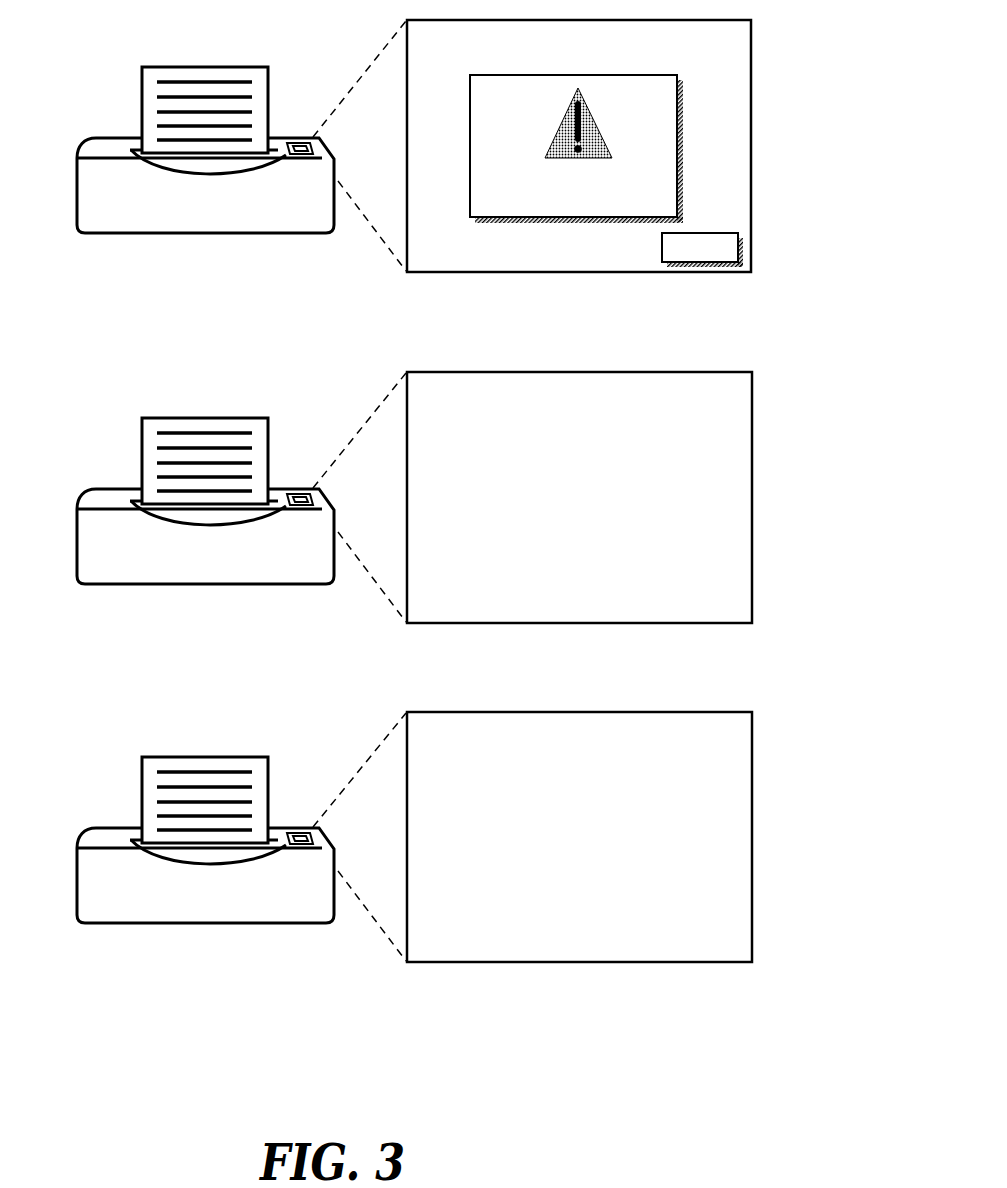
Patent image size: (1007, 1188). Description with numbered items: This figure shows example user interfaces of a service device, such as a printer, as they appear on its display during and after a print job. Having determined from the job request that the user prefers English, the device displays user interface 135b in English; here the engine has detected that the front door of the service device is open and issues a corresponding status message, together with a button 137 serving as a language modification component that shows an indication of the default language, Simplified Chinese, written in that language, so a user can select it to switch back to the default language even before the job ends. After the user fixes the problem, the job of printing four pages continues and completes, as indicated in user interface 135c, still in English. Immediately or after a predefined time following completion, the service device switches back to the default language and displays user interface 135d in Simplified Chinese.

The user interface 135b is at (606, 146).
The user interface 135c is at (742, 474).
The user interface 135d is at (743, 818).
The button 137 is at (740, 256).